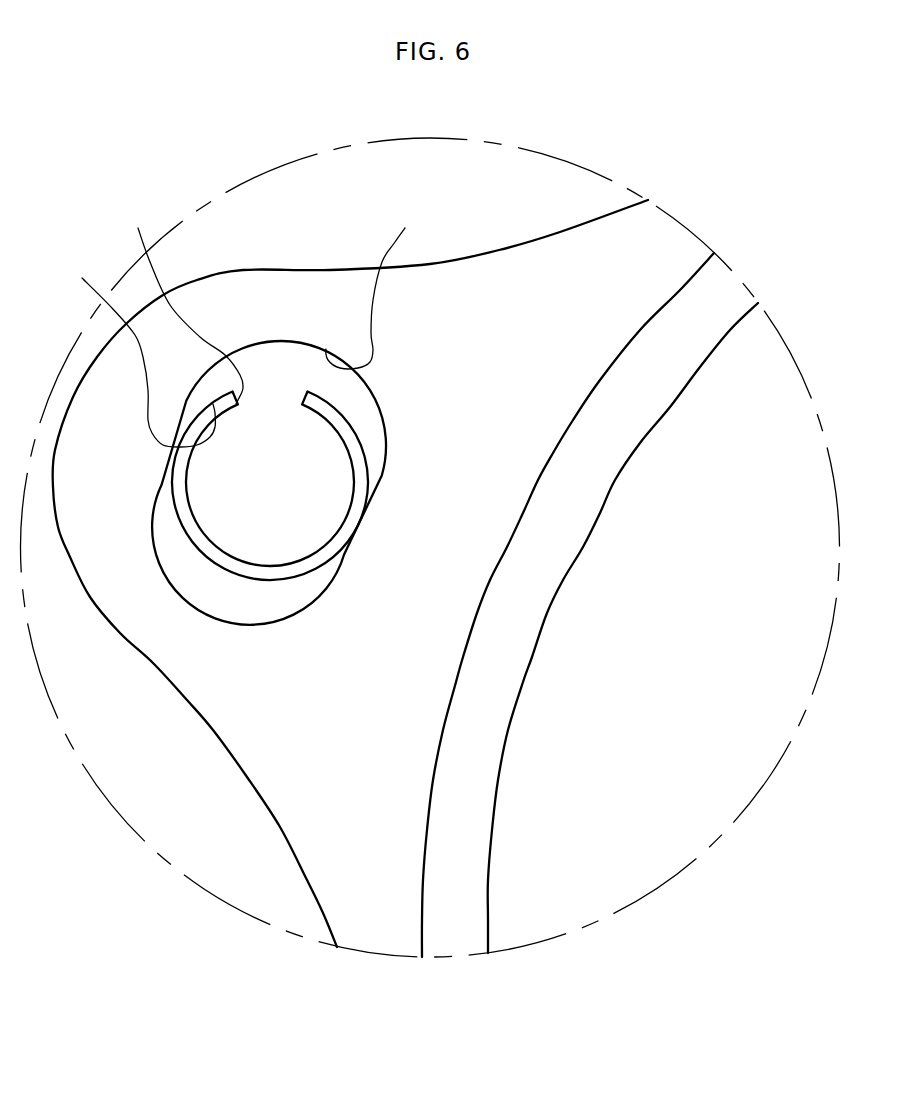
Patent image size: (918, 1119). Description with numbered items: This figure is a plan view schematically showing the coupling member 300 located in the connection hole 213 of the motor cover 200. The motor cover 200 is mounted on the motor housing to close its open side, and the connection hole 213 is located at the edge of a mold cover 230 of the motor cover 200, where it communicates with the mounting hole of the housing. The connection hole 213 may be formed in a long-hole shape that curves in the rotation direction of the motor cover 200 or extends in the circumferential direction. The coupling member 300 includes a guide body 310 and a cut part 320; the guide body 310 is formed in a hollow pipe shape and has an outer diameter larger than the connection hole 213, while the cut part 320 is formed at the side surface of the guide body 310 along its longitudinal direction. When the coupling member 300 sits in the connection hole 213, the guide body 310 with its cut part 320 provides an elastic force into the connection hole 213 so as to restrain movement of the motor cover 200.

The motor cover 200 is at (336, 258).
The connection hole 213 is at (379, 284).
The mold cover 230 is at (272, 331).
The coupling member 300 is at (121, 188).
The guide body 310 is at (135, 350).
The cut part 320 is at (178, 302).